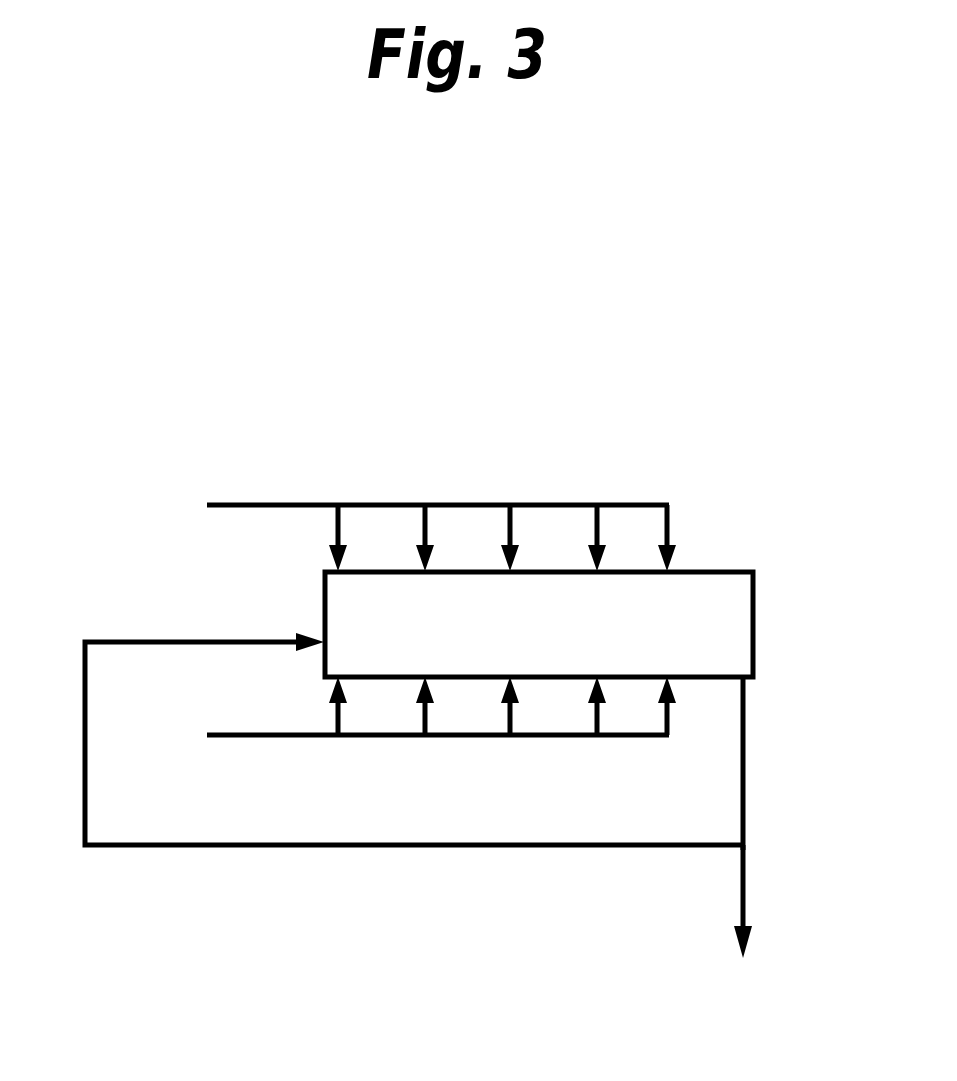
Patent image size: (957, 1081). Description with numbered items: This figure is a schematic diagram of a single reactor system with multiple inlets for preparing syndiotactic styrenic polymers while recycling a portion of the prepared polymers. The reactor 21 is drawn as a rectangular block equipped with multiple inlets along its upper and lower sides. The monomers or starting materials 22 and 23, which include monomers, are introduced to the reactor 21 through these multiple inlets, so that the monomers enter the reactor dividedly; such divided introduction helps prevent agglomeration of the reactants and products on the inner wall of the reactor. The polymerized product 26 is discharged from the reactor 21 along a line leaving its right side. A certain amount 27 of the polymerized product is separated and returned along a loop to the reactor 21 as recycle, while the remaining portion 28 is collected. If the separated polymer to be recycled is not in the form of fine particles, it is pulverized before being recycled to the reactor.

The reactor 21 is at (688, 588).
The starting materials 22 is at (411, 722).
The starting materials 23 is at (412, 527).
The polymerized product 26 is at (745, 722).
The recycled amount of polymerized product 27 is at (414, 739).
The remaining portion 28 is at (745, 882).